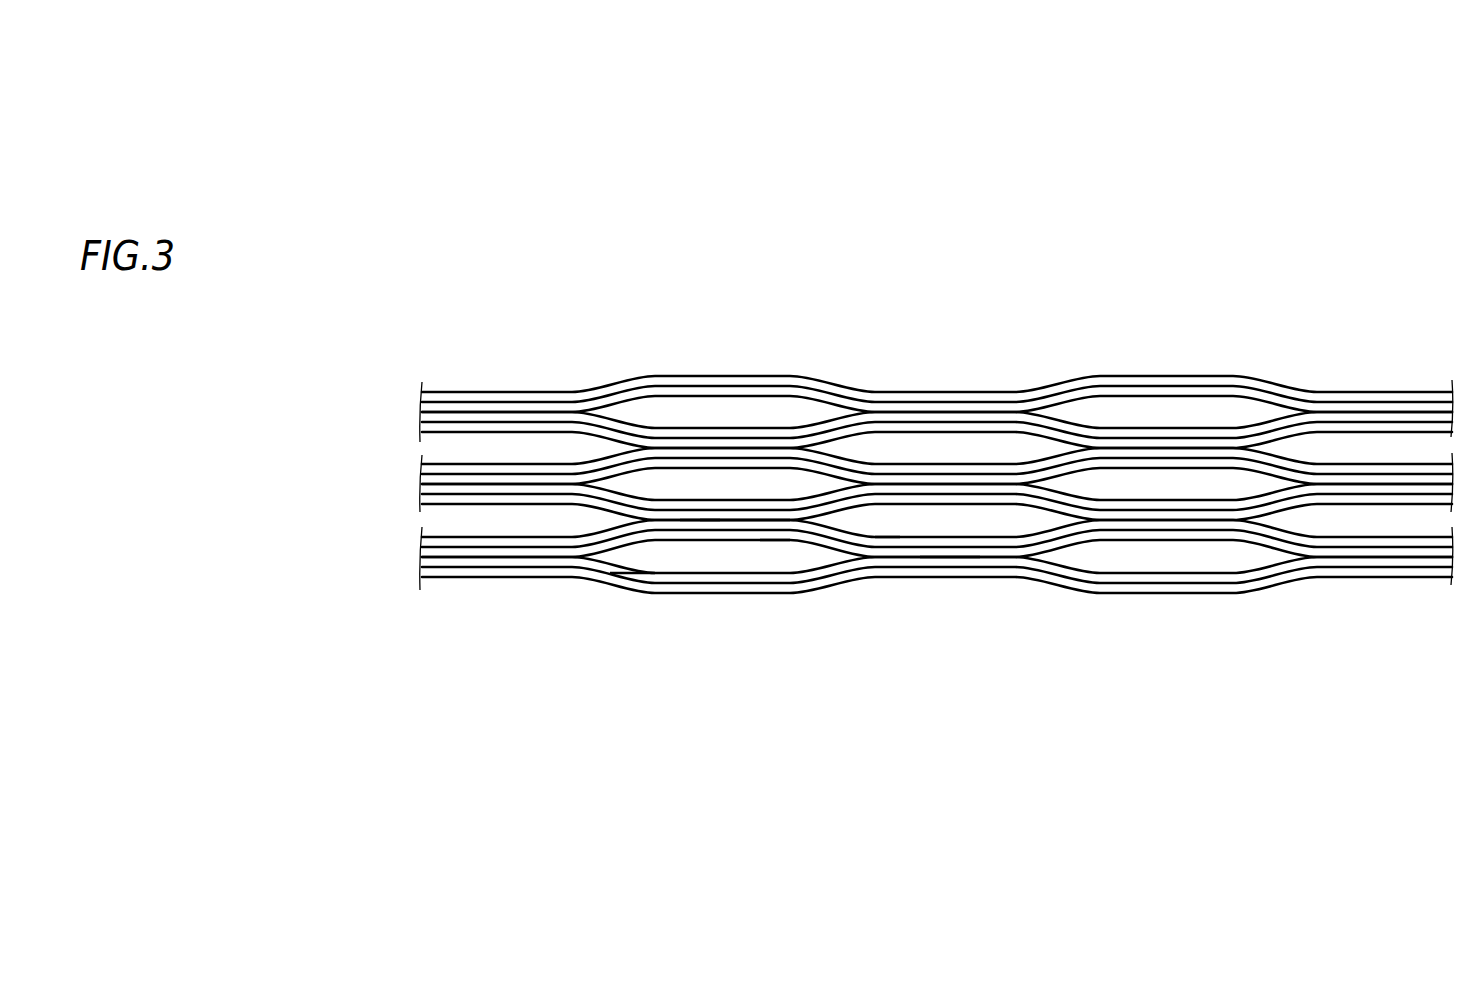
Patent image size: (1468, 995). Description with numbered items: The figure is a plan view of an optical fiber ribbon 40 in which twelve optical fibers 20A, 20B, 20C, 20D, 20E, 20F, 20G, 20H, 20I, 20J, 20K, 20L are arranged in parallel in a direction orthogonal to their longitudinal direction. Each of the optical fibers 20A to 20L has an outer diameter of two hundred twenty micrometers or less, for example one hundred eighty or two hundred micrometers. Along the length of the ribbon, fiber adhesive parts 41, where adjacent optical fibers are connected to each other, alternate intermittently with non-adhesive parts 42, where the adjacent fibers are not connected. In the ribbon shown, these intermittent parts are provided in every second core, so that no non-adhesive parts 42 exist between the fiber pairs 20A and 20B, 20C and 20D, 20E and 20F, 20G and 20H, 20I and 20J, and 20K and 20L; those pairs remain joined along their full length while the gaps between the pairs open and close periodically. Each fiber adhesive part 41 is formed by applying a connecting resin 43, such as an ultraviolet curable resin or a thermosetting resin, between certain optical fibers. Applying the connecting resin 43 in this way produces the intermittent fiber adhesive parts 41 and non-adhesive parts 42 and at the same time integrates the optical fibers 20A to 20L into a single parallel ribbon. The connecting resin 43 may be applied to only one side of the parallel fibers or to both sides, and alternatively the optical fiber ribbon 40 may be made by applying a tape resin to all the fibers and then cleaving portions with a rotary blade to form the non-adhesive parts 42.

The optical fiber 20A is at (419, 395).
The optical fiber 20B is at (419, 406).
The optical fiber 20C is at (419, 416).
The optical fiber 20D is at (419, 428).
The optical fiber 20E is at (419, 466).
The optical fiber 20F is at (419, 481).
The optical fiber 20G is at (419, 493).
The optical fiber 20H is at (419, 503).
The optical fiber 20I is at (419, 541).
The optical fiber 20J is at (419, 550).
The optical fiber 20K is at (419, 560).
The optical fiber 20L is at (419, 577).
The optical fiber ribbon 40 is at (823, 344).
The fiber adhesive part 41 is at (738, 522).
The non-adhesive part 42 is at (888, 527).
The connecting resin 43 is at (697, 520).